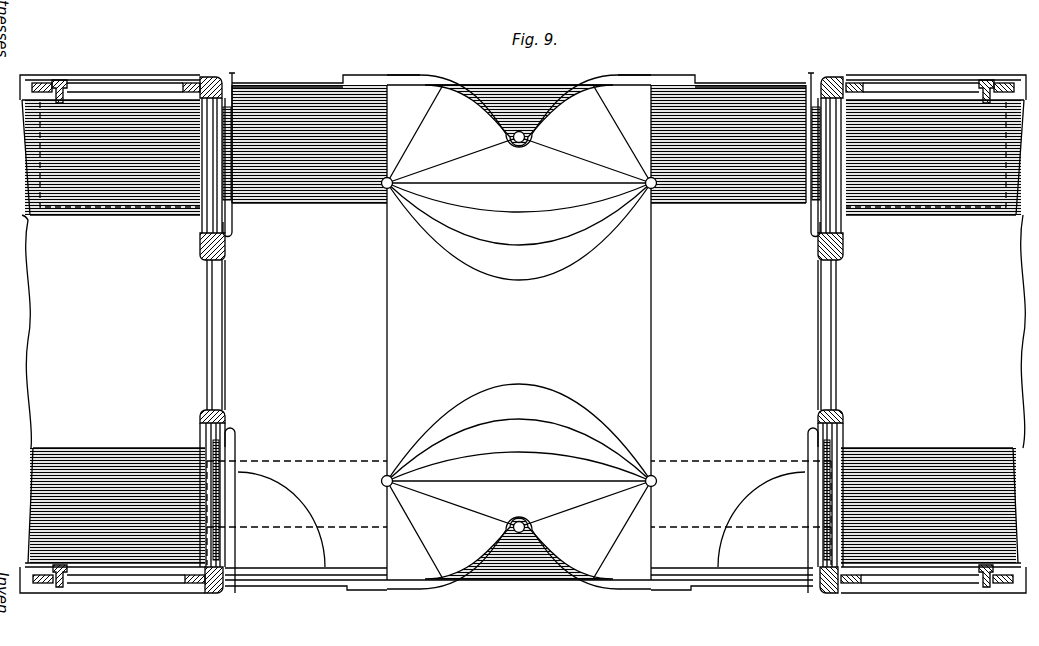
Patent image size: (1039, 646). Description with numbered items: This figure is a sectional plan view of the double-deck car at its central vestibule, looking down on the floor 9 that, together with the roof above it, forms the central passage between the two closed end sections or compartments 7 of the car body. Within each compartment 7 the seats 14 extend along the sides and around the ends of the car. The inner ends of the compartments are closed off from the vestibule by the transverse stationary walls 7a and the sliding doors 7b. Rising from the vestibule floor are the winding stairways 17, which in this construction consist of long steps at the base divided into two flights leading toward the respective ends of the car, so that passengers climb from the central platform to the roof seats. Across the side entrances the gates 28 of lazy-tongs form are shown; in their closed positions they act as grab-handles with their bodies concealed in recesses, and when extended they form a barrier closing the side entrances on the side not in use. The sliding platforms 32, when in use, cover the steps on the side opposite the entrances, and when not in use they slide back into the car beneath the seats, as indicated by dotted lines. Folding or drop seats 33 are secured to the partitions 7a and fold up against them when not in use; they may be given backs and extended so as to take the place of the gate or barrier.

The end section or compartment 7 is at (523, 331).
The transverse stationary wall 7a is at (830, 536).
The sliding door 7b is at (205, 343).
The floor 9 is at (519, 332).
The seat 14 is at (523, 334).
The winding stairway 17 is at (519, 332).
The gate 28 is at (308, 570).
The sliding platform 32 is at (130, 208).
The folding or drop seat 33 is at (232, 200).